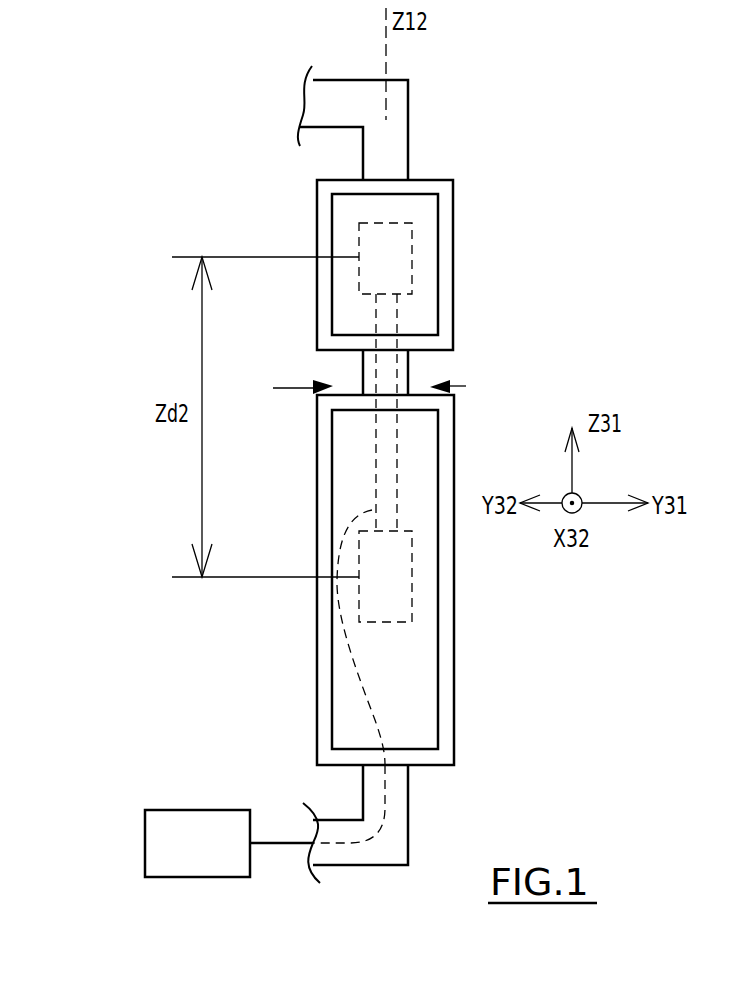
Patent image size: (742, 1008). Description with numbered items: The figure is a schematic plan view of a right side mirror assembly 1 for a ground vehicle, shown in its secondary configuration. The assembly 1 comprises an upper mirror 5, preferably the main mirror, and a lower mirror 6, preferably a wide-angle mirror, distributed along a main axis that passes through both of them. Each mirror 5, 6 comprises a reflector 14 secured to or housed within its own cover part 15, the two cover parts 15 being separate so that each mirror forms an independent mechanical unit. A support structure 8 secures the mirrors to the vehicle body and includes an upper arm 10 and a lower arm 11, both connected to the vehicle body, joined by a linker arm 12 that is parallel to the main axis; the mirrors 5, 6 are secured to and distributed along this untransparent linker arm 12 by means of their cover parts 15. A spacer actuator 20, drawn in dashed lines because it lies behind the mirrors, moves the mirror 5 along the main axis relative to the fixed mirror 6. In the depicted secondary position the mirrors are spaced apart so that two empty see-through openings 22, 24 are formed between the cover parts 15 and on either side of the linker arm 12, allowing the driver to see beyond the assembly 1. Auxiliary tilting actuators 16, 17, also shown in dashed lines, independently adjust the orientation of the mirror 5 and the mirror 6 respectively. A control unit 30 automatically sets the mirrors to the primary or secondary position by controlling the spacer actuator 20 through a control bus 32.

The side mirror assembly 1 is at (478, 128).
The upper arm 10 is at (340, 103).
The lower arm 11 is at (353, 852).
The reflector 14 is at (421, 213).
The cover part 15 is at (447, 213).
The mirror 5 is at (422, 252).
The mirror 6 is at (413, 657).
The actuator 16 is at (413, 275).
The support structure 8 is at (402, 362).
The spacer actuator 20 is at (368, 360).
The linker arm 12 is at (363, 372).
The see-through opening 22 is at (466, 386).
The see-through opening 24 is at (273, 388).
The actuator 17 is at (412, 575).
The control bus 32 is at (410, 825).
The control unit 30 is at (215, 828).